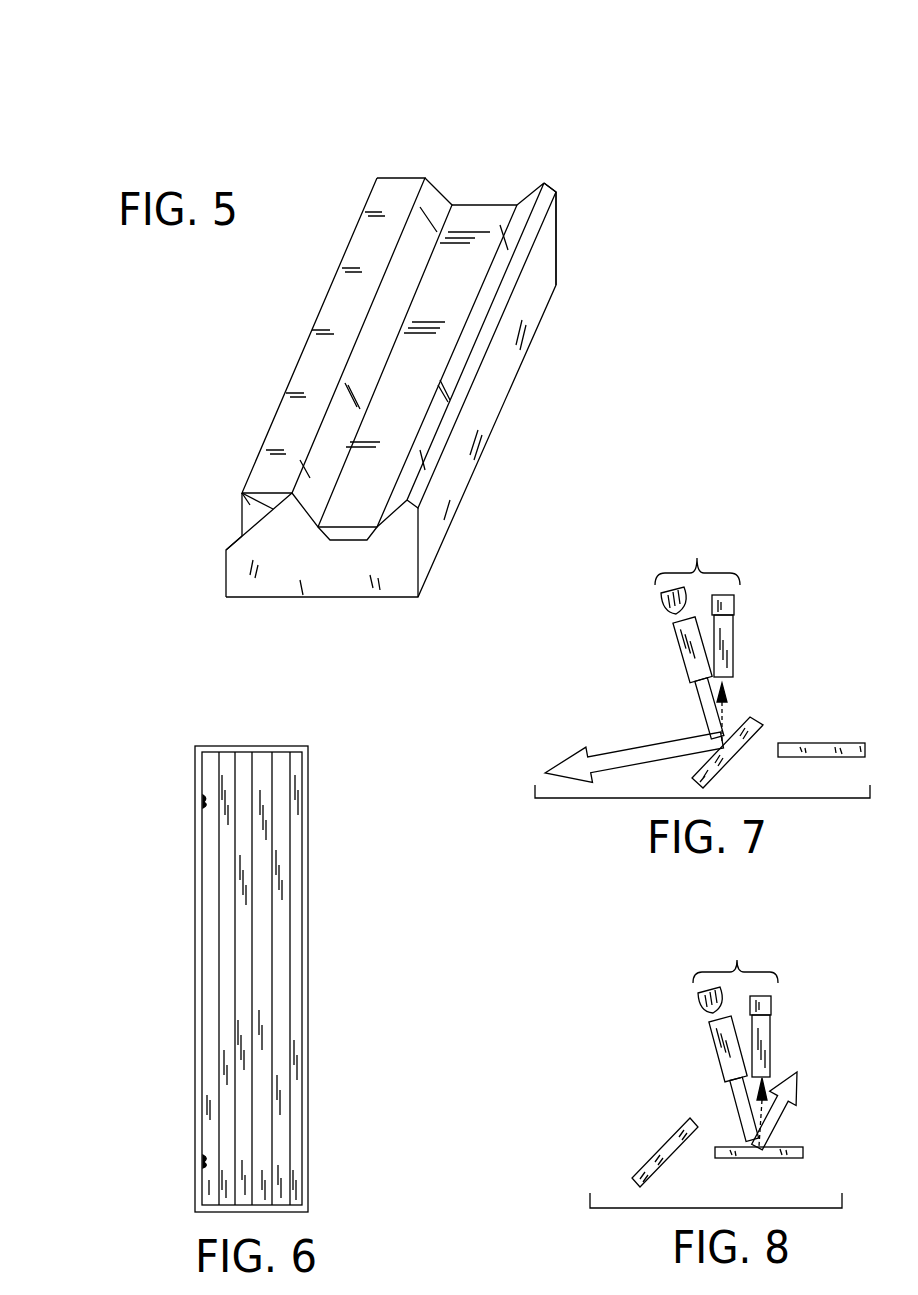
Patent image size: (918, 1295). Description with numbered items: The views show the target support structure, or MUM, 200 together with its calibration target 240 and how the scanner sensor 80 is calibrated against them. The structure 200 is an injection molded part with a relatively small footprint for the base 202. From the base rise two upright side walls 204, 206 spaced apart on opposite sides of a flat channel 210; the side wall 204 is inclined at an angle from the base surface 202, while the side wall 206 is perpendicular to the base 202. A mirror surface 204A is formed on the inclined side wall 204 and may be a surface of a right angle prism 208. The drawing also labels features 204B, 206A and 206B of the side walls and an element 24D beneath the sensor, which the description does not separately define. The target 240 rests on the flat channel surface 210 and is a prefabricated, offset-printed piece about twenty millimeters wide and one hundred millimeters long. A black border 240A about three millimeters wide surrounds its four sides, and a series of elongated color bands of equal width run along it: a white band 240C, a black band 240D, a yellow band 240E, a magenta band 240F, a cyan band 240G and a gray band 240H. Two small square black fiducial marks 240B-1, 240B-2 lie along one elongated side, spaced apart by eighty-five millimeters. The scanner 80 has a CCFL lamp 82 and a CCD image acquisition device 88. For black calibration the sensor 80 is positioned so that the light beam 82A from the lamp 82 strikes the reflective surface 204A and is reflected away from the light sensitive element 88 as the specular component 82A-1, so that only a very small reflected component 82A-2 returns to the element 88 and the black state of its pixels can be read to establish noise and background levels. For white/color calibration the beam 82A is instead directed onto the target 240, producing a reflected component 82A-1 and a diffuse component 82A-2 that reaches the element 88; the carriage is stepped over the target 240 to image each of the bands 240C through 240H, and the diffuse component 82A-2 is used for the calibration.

In FIG. 5, the support structure 200 is at (322, 286).
In FIG. 5, the base 202 is at (282, 598).
In FIG. 5, the inclined side wall 204 is at (283, 430).
In FIG. 5, the mirror surface 204A is at (245, 492).
In FIG. 7, the mirror surface 204A is at (740, 722).
In FIG. 8, the mirror surface 204A is at (647, 1158).
In FIG. 5, the groove slope surface 204B is at (457, 205).
In FIG. 5, the side wall 206 is at (467, 467).
In FIG. 5, the outer side surface 206A is at (566, 240).
In FIG. 5, the top surface of second wall 206B is at (515, 198).
In FIG. 5, the right angle prism 208 is at (255, 511).
In FIG. 5, the flat channel 210 is at (468, 168).
In FIG. 5, the target 240 is at (487, 205).
In FIG. 6, the target 240 is at (145, 1017).
In FIG. 7, the target 240 is at (833, 743).
In FIG. 6, the black border 240A is at (217, 747).
In FIG. 6, the fiducial mark 240B-1 is at (204, 795).
In FIG. 6, the fiducial mark 240B-2 is at (204, 1155).
In FIG. 6, the white band 240C is at (210, 845).
In FIG. 6, the black band 240D is at (227, 758).
In FIG. 6, the yellow band 240E is at (242, 775).
In FIG. 6, the magenta band 240F is at (262, 780).
In FIG. 6, the cyan band 240G is at (283, 798).
In FIG. 6, the gray band 240H is at (298, 822).
In FIG. 7, the scanner sensor 80 is at (697, 558).
In FIG. 8, the scanner sensor 80 is at (737, 960).
In FIG. 7, the CCFL lamp 82 is at (678, 648).
In FIG. 8, the CCFL lamp 82 is at (713, 1040).
In FIG. 7, the light beam 82A is at (700, 722).
In FIG. 8, the light beam 82A is at (744, 1109).
In FIG. 7, the reflected beam component 82A-1 is at (628, 750).
In FIG. 8, the reflected beam component 82A-1 is at (790, 1101).
In FIG. 7, the reflected beam component 82A-2 is at (727, 690).
In FIG. 8, the reflected beam component 82A-2 is at (772, 1078).
In FIG. 7, the CCD image acquisition device 88 is at (733, 638).
In FIG. 8, the CCD image acquisition device 88 is at (773, 1020).
In FIG. 8, the print medium 24D is at (790, 1147).